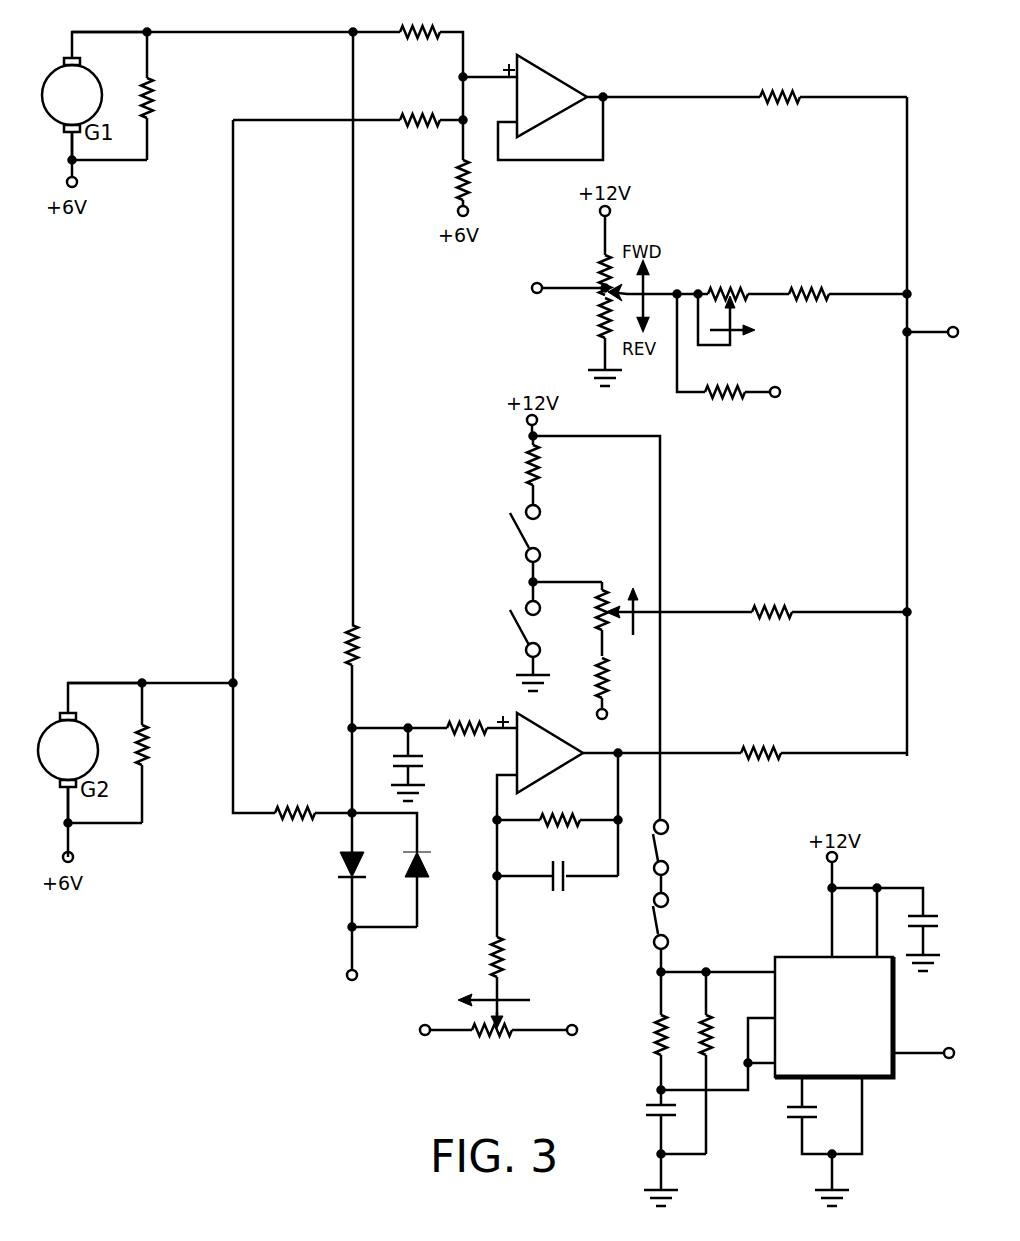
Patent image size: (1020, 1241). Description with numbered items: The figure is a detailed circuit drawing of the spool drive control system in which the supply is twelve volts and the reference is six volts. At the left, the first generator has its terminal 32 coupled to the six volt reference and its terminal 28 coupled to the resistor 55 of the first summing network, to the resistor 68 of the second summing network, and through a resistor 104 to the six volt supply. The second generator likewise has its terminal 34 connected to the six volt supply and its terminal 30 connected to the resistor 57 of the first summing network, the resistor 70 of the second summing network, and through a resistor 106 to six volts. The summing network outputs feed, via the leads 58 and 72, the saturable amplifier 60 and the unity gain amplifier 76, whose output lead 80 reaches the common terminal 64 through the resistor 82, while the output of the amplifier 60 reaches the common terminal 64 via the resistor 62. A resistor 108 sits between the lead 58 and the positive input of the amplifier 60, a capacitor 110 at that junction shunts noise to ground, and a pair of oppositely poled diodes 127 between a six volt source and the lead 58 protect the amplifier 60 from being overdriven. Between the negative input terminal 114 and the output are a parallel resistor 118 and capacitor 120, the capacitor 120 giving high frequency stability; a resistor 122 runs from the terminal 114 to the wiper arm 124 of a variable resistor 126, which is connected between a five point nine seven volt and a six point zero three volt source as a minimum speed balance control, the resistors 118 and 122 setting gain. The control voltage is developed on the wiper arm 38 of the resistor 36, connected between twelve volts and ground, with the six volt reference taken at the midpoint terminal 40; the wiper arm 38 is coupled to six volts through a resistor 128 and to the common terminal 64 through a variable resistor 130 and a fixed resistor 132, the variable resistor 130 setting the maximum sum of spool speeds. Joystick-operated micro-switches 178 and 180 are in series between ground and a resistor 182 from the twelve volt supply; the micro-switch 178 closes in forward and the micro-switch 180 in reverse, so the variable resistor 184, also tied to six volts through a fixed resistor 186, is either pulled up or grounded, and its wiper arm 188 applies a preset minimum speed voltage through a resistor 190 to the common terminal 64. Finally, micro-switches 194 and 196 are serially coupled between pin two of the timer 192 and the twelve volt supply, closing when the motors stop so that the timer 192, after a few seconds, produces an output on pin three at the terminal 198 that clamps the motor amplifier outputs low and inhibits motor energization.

The terminal 28 is at (78, 36).
The terminal 32 is at (71, 148).
The resistor 104 is at (151, 100).
The resistor 68 is at (426, 37).
The resistor 70 is at (426, 128).
The lead 72 is at (484, 76).
The unity gain amplifier 76 is at (554, 72).
The output lead 80 is at (672, 90).
The resistor 82 is at (788, 92).
The resistor 36 is at (594, 270).
The wiper arm 38 is at (636, 286).
The terminal 40 is at (539, 293).
The resistor 128 is at (728, 408).
The variable resistor 130 is at (735, 270).
The fixed value resistor 132 is at (820, 284).
The common terminal 64 is at (946, 344).
The resistor 182 is at (512, 478).
The micro-switch 178 is at (512, 538).
The micro-switch 180 is at (510, 632).
The variable resistor 184 is at (597, 614).
The fixed value resistor 186 is at (591, 676).
The wiper arm 188 is at (648, 638).
The resistor 190 is at (764, 608).
The terminal 30 is at (102, 678).
The terminal 34 is at (74, 814).
The resistor 106 is at (156, 748).
The resistor 55 is at (356, 646).
The resistor 57 is at (284, 808).
The lead 58 is at (394, 722).
The resistor 108 is at (467, 722).
The capacitor 110 is at (415, 760).
The negative input terminal 114 is at (494, 794).
The resistor 118 is at (564, 816).
The capacitor 120 is at (549, 864).
The resistor 122 is at (510, 953).
The wiper arm 124 is at (504, 1014).
The variable resistor 126 is at (492, 1042).
The pair of diodes 127 is at (405, 854).
The saturable amplifier 60 is at (578, 773).
The resistor 62 is at (756, 766).
The micro-switch 194 is at (664, 846).
The micro-switch 196 is at (664, 916).
The timer 192 is at (811, 957).
The terminal 198 is at (946, 1058).